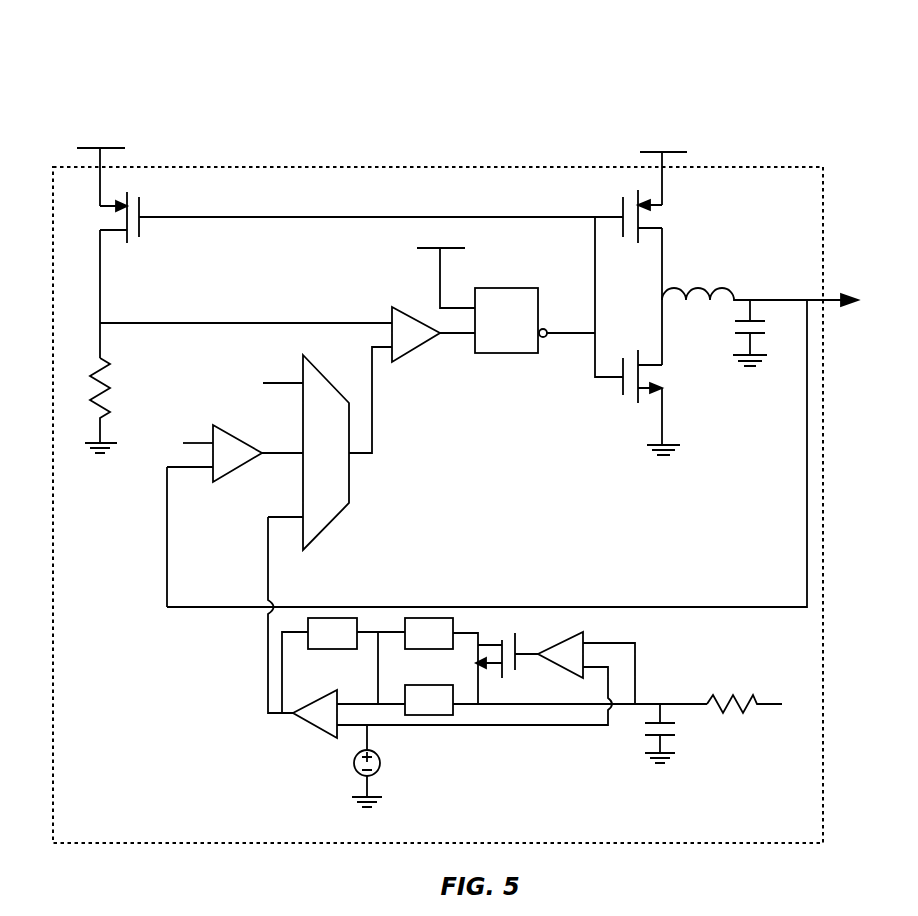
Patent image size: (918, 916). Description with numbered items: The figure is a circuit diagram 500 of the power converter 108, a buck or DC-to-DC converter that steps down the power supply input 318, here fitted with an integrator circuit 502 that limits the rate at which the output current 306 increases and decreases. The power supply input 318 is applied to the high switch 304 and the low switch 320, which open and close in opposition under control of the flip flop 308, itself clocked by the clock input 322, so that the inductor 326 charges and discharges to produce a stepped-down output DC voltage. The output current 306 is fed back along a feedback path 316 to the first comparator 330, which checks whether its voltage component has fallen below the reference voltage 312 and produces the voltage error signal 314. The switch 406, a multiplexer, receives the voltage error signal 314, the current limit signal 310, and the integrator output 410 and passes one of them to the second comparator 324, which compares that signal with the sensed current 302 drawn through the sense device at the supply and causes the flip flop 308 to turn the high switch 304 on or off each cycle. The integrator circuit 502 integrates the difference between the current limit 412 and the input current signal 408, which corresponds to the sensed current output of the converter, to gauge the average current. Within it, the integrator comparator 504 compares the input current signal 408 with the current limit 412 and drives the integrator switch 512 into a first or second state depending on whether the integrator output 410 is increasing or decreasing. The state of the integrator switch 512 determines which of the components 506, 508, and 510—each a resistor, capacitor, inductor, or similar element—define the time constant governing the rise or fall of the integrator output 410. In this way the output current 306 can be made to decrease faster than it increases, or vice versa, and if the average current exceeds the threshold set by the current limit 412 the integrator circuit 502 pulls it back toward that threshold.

The circuit diagram 500 is at (196, 78).
The power converter 108 is at (508, 167).
The power supply input 318 is at (100, 147).
The sensed current 302 is at (85, 300).
The high switch 304 is at (622, 198).
The output current 306 is at (683, 276).
The flip flop 308 is at (535, 320).
The current limit signal 310 is at (272, 383).
The reference voltage 312 is at (183, 443).
The voltage error signal 314 is at (278, 452).
The feedback line 316 is at (418, 606).
The low switch 320 is at (623, 392).
The clock input 322 is at (507, 360).
The second comparator 324 is at (392, 306).
The inductor 326 is at (706, 303).
The first comparator 330 is at (222, 426).
The switch 406 is at (347, 448).
The input current signal 408 is at (703, 680).
The integrator output 410 is at (266, 519).
The current limit 412 is at (363, 735).
The integrator circuit 502 is at (245, 622).
The integrator comparator 504 is at (582, 631).
The component 506 is at (343, 665).
The component 508 is at (453, 661).
The component 510 is at (522, 700).
The integrator switch 512 is at (502, 632).